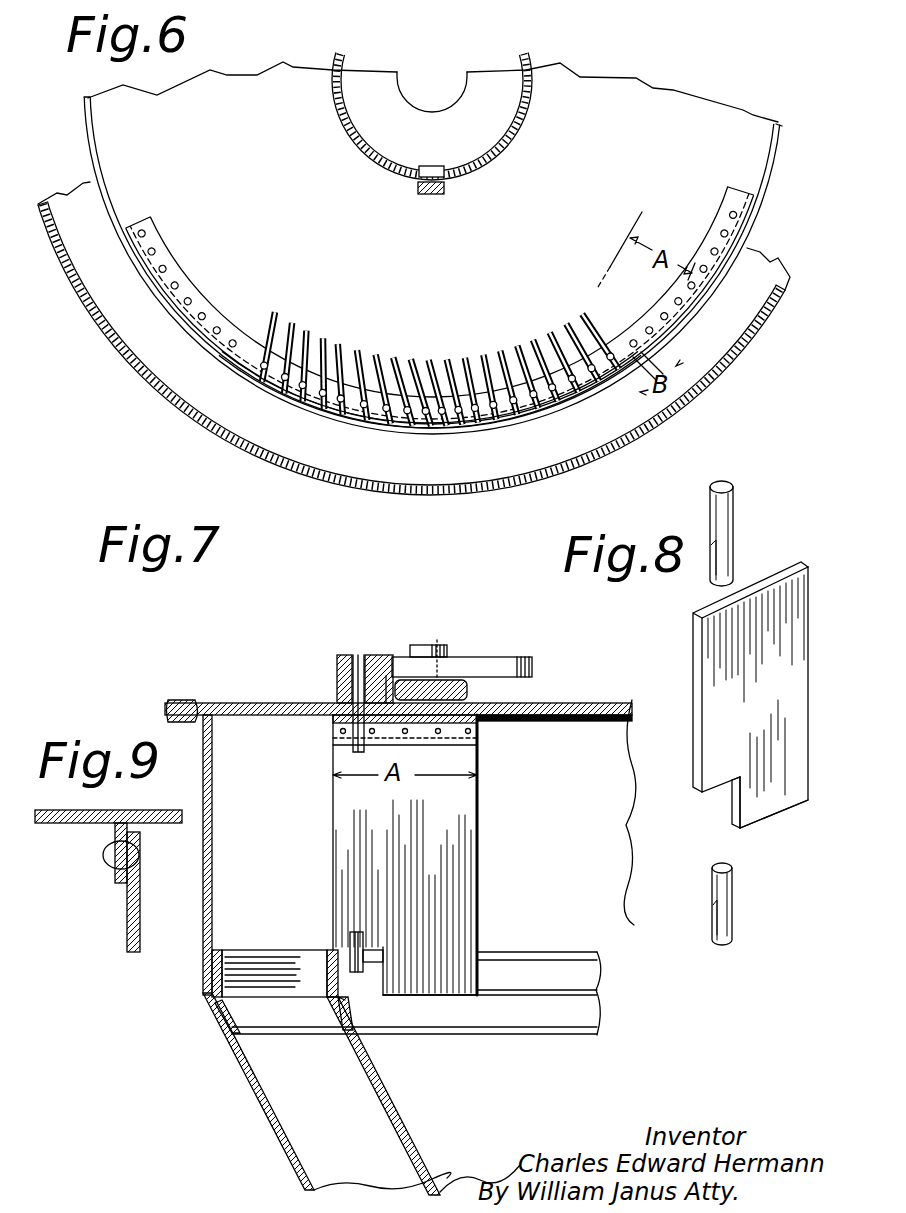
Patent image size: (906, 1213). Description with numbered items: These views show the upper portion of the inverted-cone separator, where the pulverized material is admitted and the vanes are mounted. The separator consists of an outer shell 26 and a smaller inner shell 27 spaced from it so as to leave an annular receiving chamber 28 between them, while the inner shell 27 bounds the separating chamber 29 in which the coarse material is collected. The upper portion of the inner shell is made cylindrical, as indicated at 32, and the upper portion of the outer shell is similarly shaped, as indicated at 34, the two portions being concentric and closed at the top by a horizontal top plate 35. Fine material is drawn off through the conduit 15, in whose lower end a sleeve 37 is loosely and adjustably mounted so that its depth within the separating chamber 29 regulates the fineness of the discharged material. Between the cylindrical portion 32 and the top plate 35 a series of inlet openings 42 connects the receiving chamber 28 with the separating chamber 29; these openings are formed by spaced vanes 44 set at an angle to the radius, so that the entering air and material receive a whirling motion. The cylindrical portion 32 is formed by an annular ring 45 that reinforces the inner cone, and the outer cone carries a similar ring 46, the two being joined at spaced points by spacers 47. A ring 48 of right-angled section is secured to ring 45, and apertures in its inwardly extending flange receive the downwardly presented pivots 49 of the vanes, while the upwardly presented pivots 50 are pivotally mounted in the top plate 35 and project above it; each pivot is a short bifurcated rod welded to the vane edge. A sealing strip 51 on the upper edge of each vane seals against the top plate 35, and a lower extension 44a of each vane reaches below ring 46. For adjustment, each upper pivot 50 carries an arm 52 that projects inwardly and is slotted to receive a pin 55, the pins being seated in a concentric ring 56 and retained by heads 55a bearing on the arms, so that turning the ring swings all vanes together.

In FIG. 6, the conduit 15 is at (348, 137).
In FIG. 6, the outer shell 26 is at (265, 458).
In FIG. 7, the outer shell 26 is at (262, 1088).
In FIG. 6, the inner shell 27 is at (670, 112).
In FIG. 7, the inner shell 27 is at (402, 1132).
In FIG. 6, the annular receiving chamber 28 is at (488, 482).
In FIG. 7, the annular receiving chamber 28 is at (235, 945).
In FIG. 7, the separating chamber 29 is at (630, 840).
In FIG. 6, the cylindrical portion 32 is at (100, 133).
In FIG. 7, the cylindrical portion 32 is at (297, 952).
In FIG. 6, the cylindrical portion 34 is at (142, 372).
In FIG. 7, the cylindrical portion 34 is at (203, 753).
In FIG. 7, the top plate 35 is at (255, 702).
In FIG. 9, the top plate 35 is at (70, 823).
In FIG. 6, the sleeve 37 is at (436, 196).
In FIG. 6, the inlet openings 42 is at (407, 417).
In FIG. 7, the inlet openings 42 is at (338, 833).
In FIG. 6, the vanes 44 is at (339, 344).
In FIG. 7, the vanes 44 is at (478, 845).
In FIG. 8, the vanes 44 is at (718, 668).
In FIG. 9, the vanes 44 is at (132, 940).
In FIG. 7, the extension 44a is at (463, 980).
In FIG. 8, the extension 44a is at (786, 798).
In FIG. 7, the annular ring 45 is at (353, 1010).
In FIG. 7, the ring 46 is at (222, 1020).
In FIG. 7, the spacers 47 is at (273, 975).
In FIG. 6, the ring 48 is at (168, 256).
In FIG. 7, the ring 48 is at (535, 968).
In FIG. 7, the lower pivots 49 is at (352, 975).
In FIG. 8, the lower pivots 49 is at (720, 945).
In FIG. 6, the upper pivots 50 is at (305, 380).
In FIG. 7, the upper pivots 50 is at (357, 655).
In FIG. 8, the upper pivots 50 is at (738, 482).
In FIG. 7, the sealing strip 51 is at (480, 725).
In FIG. 9, the sealing strip 51 is at (115, 878).
In FIG. 7, the arm 52 is at (497, 662).
In FIG. 7, the pin 55 is at (417, 667).
In FIG. 7, the head 55a is at (433, 647).
In FIG. 7, the ring 56 is at (468, 692).